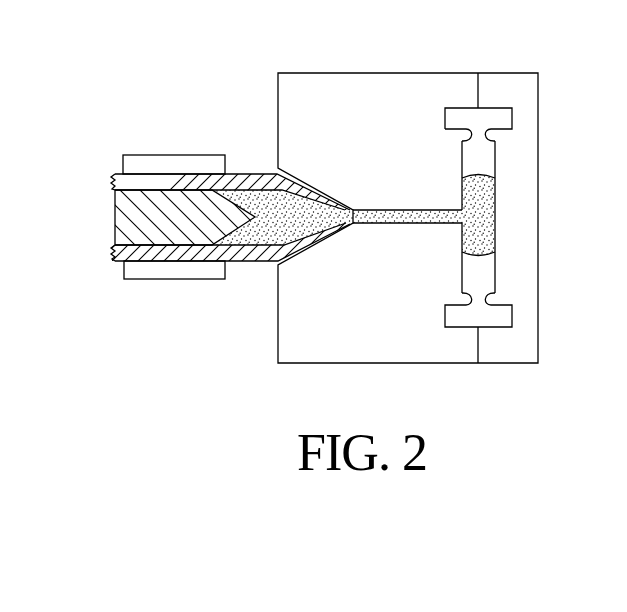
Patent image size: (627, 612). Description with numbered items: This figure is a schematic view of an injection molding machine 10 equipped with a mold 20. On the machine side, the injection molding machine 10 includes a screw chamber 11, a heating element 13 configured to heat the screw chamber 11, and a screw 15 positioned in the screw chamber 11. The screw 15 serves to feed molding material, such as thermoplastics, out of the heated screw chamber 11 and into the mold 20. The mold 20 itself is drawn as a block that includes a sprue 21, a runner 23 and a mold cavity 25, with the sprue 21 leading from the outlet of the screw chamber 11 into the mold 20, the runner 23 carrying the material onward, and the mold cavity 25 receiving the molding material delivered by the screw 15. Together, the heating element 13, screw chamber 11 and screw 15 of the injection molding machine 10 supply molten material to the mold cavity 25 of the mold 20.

The injection molding machine 10 is at (109, 101).
The screw chamber 11 is at (257, 233).
The heating element 13 is at (175, 155).
The screw 15 is at (119, 220).
The mold 20 is at (532, 92).
The sprue 21 is at (404, 221).
The runner 23 is at (490, 213).
The mold cavity 25 is at (498, 317).